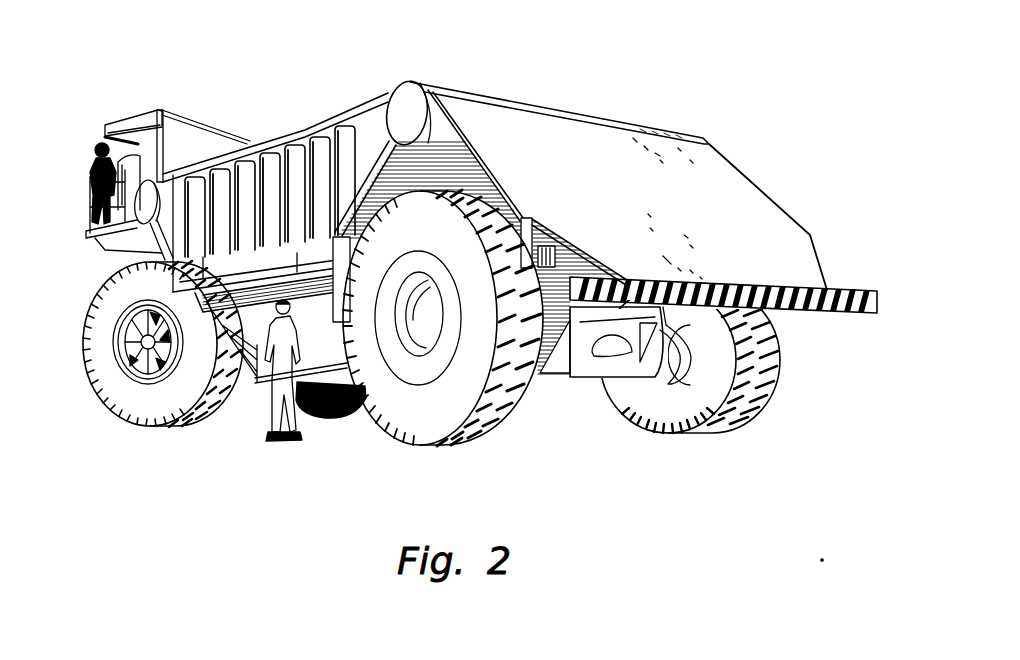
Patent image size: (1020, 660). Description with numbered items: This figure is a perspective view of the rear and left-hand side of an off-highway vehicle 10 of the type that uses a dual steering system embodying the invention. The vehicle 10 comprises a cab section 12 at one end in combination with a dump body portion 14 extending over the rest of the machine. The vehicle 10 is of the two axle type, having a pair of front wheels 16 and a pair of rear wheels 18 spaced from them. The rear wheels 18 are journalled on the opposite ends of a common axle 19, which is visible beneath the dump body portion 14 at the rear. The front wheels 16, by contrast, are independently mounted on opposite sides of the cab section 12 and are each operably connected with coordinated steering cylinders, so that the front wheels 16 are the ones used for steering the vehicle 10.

The off-highway vehicle 10 is at (340, 76).
The cab section 12 is at (131, 112).
The dump body portion 14 is at (573, 112).
The front wheels 16 is at (130, 400).
The rear wheels 18 is at (413, 410).
The common axle 19 is at (562, 370).